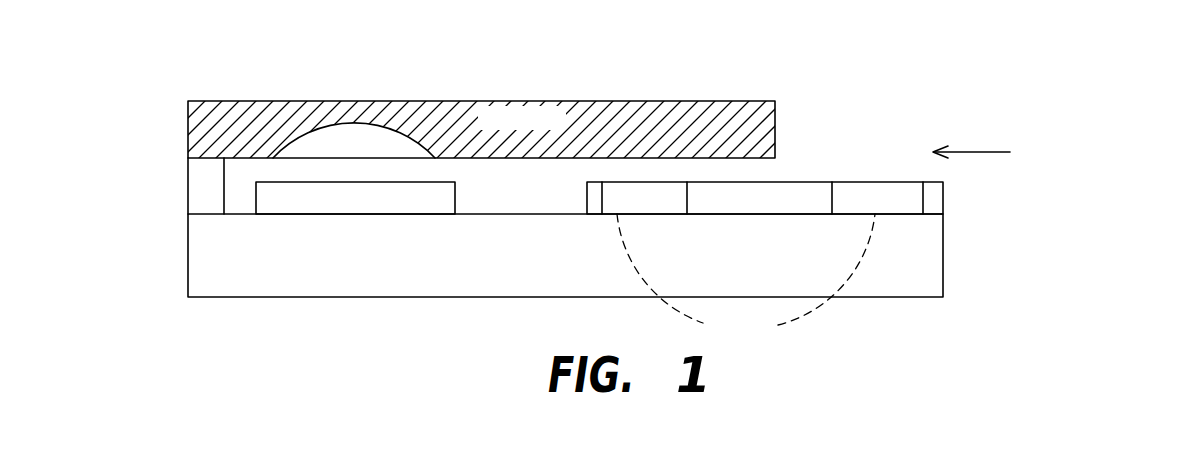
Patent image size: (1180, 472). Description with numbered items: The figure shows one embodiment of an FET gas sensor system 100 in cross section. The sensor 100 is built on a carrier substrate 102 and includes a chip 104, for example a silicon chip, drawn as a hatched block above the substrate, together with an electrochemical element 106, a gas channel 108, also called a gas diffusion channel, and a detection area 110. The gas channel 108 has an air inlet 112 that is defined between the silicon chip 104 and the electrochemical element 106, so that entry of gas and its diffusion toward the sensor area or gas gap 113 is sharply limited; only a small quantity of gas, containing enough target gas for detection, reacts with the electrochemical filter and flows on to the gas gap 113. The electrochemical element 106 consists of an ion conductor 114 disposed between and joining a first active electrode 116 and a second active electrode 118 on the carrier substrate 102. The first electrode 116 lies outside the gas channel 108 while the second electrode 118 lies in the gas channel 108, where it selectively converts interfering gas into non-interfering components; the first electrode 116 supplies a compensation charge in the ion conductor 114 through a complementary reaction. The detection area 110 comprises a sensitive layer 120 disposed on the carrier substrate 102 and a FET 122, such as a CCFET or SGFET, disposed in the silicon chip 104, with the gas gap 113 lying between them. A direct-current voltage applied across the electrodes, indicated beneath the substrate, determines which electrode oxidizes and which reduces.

The FET gas sensor system 100 is at (942, 72).
The carrier substrate 102 is at (918, 298).
The chip 104 is at (673, 102).
The electrochemical element 106 is at (838, 182).
The gas channel 108 is at (549, 205).
The detection area 110 is at (250, 173).
The air inlet 112 is at (778, 172).
The sensor area/gas gap 113 is at (352, 160).
The ion conductor 114 is at (740, 215).
The first active electrode 116 is at (903, 215).
The second active electrode 118 is at (647, 215).
The sensitive layer 120 is at (385, 215).
The FET 122 is at (347, 122).